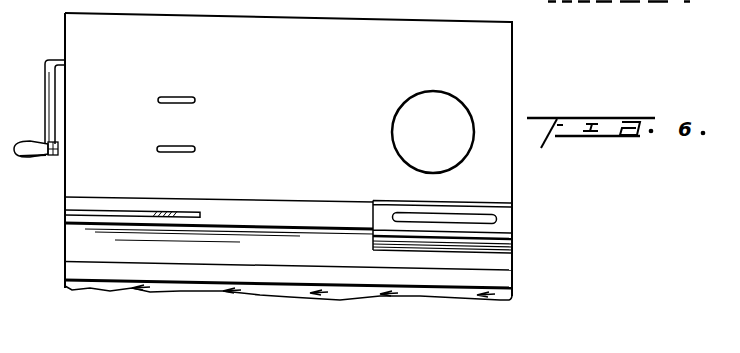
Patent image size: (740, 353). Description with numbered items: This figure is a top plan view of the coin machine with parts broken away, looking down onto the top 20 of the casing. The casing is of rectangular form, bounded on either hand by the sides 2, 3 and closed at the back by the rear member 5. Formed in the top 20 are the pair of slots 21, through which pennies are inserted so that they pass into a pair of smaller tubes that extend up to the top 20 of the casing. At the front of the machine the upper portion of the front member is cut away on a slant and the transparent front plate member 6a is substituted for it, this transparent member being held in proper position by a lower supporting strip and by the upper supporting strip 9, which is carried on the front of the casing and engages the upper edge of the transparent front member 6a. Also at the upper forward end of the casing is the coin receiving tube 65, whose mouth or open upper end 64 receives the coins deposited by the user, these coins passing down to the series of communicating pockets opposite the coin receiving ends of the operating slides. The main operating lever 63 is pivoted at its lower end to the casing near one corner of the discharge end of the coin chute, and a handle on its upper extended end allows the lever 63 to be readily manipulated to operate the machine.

The side member 2 is at (65, 193).
The side member 3 is at (512, 197).
The rear member 5 is at (512, 22).
The transparent front plate member 6a is at (406, 300).
The upper supporting strip 9 is at (512, 284).
The top 20 is at (78, 47).
The slots 21 is at (172, 103).
The main operating lever 63 is at (170, 210).
The mouth or open upper end 64 is at (496, 220).
The coin receiving tube 65 is at (293, 204).